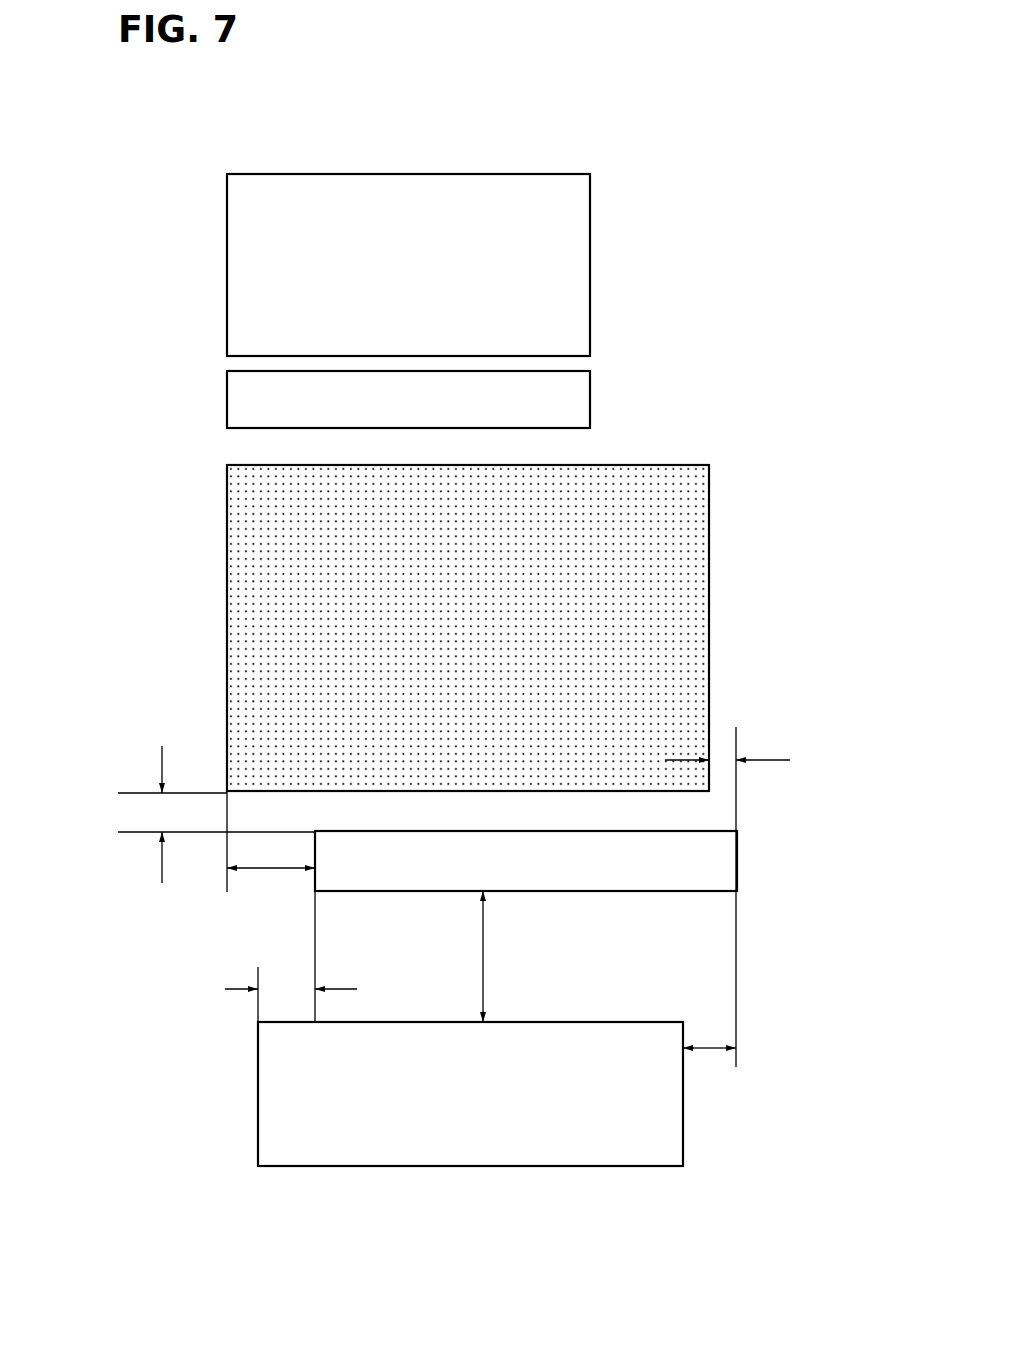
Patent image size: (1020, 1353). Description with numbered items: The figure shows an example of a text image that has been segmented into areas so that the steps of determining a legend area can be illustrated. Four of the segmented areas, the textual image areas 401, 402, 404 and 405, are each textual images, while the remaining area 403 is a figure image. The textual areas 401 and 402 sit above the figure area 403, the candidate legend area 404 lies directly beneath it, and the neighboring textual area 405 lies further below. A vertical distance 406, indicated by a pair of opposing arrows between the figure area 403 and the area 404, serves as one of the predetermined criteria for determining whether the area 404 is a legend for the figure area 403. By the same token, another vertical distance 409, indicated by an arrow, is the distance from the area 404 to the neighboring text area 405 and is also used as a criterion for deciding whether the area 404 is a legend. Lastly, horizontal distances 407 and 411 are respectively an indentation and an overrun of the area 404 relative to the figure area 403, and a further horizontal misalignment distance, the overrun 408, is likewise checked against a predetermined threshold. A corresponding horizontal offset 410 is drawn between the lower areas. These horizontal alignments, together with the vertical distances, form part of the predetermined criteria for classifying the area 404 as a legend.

The textual image area 401 is at (590, 248).
The textual image area 402 is at (590, 400).
The figure image area 403 is at (709, 508).
The textual image area 404 is at (737, 880).
The textual image area 405 is at (258, 1090).
The vertical distance 406 is at (177, 832).
The indentation 407 is at (272, 868).
The overrun 408 is at (719, 760).
The vertical distance to neighboring text area 409 is at (484, 958).
The lateral offset of board from substrate 410 is at (285, 990).
The overrun 411 is at (707, 1050).